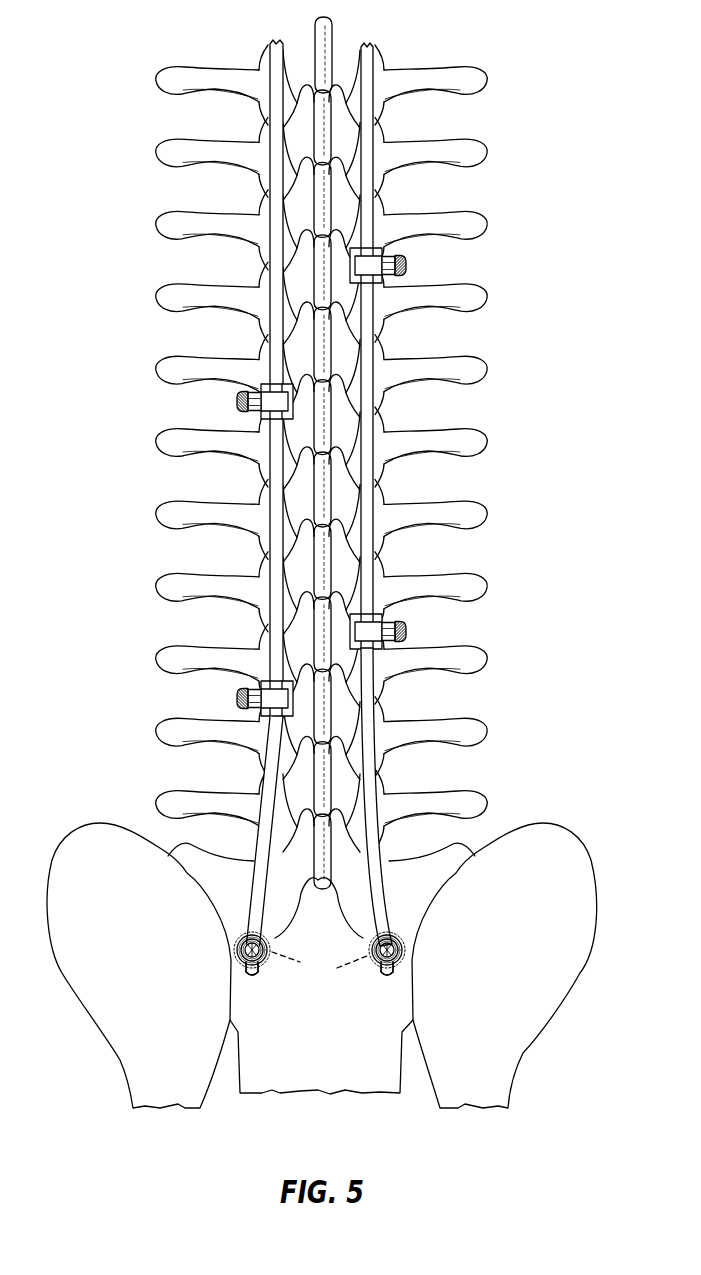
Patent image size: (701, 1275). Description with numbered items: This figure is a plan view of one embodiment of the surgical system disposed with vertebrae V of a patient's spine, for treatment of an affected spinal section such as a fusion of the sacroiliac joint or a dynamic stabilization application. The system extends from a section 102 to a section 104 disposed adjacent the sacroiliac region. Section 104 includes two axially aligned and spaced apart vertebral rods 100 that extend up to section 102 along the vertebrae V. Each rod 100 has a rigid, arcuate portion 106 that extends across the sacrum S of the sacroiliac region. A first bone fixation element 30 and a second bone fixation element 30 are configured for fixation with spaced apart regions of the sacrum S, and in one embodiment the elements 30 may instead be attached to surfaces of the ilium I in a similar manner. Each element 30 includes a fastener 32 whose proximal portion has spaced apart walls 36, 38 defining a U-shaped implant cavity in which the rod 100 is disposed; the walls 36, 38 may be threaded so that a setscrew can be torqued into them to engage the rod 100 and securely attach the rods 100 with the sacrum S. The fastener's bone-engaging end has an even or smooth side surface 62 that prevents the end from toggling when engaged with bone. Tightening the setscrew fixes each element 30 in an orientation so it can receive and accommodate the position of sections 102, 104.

The vertebral rod 100 is at (277, 340).
The section 102 is at (332, 378).
The section 104 is at (295, 837).
The arcuate portion 106 is at (268, 775).
The bone fixation element 30 is at (331, 955).
The side surface 62 is at (243, 943).
The wall 36 is at (243, 966).
The wall 38 is at (268, 967).
The fastener 32 is at (300, 963).
The vertebrae V is at (467, 658).
The ilium I is at (487, 1070).
The sacrum S is at (265, 1066).